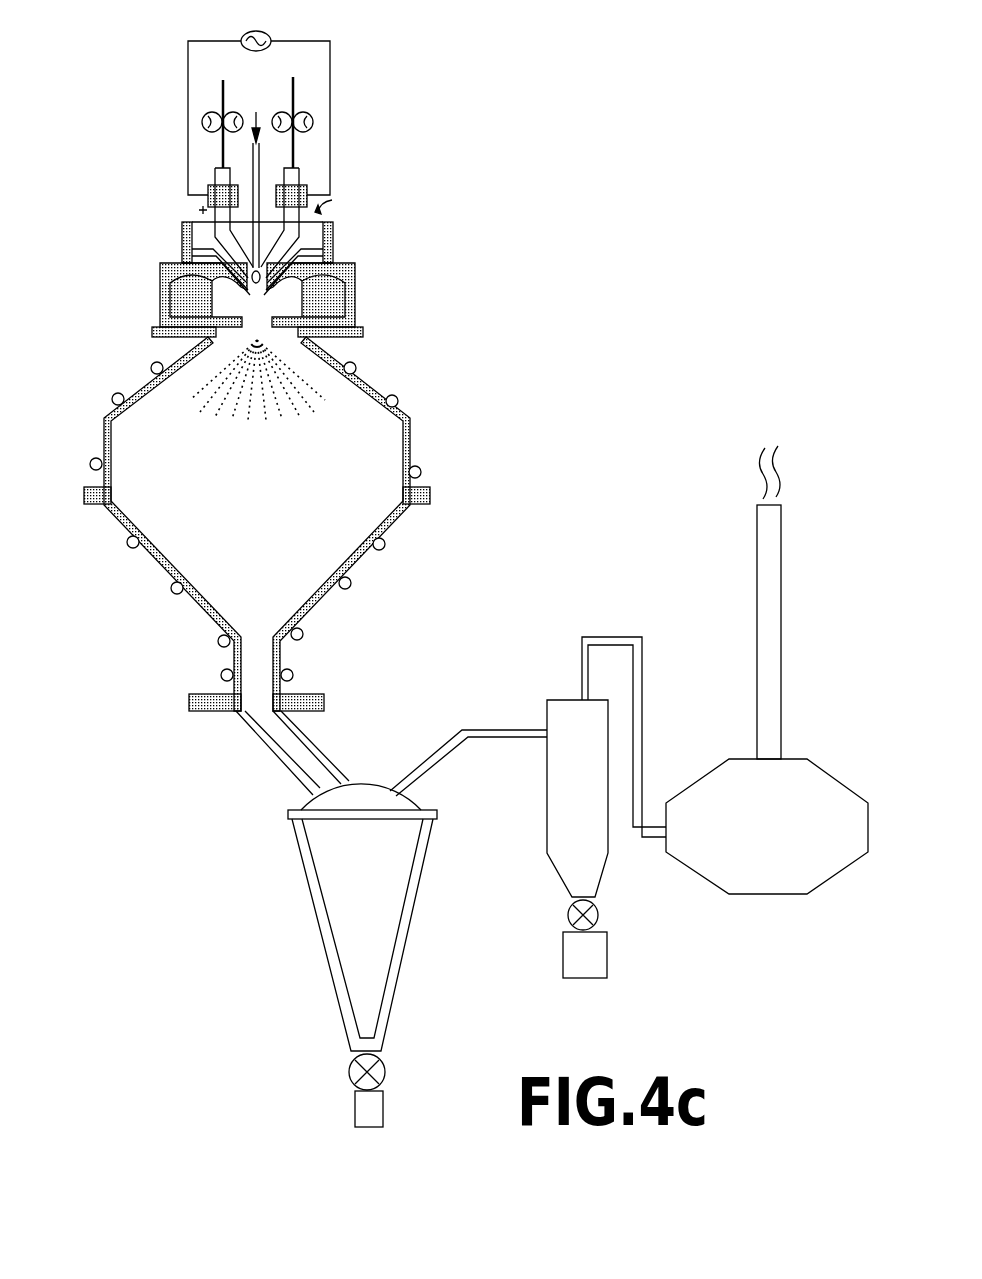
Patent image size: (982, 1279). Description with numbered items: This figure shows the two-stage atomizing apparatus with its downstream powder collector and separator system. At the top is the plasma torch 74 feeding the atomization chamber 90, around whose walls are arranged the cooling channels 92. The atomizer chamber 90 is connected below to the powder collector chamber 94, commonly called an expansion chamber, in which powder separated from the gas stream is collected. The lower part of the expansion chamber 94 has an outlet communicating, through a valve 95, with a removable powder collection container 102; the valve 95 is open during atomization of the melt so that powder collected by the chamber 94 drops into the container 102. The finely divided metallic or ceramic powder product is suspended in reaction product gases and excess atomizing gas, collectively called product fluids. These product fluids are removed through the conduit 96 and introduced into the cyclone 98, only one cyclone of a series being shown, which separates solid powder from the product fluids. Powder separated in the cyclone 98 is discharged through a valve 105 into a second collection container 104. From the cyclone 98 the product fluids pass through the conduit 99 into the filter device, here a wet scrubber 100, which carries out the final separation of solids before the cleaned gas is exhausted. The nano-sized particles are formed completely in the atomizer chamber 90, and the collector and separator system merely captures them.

The plasma torch 74 is at (203, 223).
The atomization chamber 90 is at (400, 373).
The cooling channels 92 is at (117, 399).
The powder collector chamber 94 is at (313, 918).
The valve 95 is at (383, 1085).
The conduit 96 is at (447, 737).
The cyclone 98 is at (553, 840).
The conduit 99 is at (643, 707).
The wet scrubber 100 is at (707, 884).
The powder collection container 102 is at (360, 1105).
The collection container 104 is at (565, 970).
The valve 105 is at (570, 922).